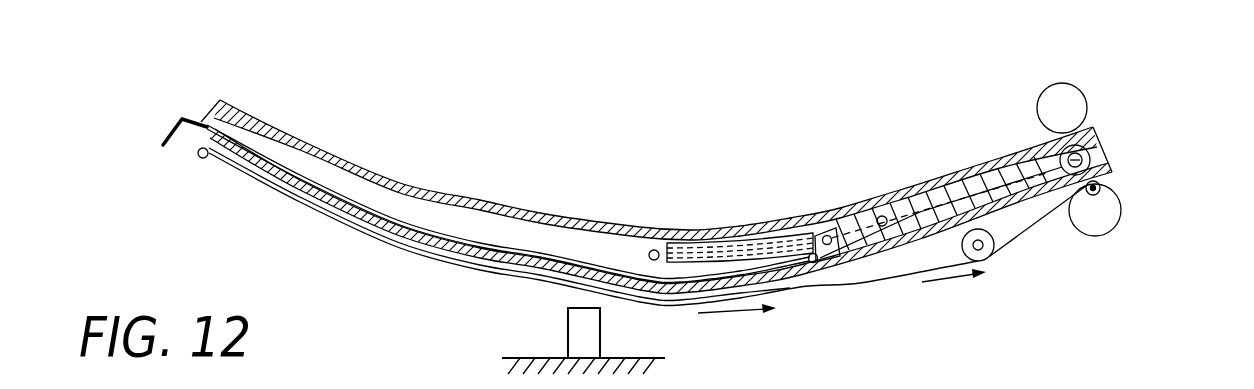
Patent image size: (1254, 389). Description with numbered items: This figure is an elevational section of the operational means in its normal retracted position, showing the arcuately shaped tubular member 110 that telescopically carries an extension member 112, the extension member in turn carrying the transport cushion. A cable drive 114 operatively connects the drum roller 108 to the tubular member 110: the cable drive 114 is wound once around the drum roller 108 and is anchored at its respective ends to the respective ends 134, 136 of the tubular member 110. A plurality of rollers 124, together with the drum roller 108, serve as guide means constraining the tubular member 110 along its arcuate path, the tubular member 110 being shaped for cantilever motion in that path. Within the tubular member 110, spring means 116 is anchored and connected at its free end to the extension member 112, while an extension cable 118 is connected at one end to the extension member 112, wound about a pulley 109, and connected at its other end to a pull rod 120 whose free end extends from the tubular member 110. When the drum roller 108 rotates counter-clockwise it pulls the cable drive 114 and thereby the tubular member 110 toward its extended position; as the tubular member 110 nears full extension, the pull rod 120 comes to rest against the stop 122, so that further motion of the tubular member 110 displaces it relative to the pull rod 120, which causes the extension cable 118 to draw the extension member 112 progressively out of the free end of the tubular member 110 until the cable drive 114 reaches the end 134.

The drum roller 108 is at (990, 257).
The pulley 109 is at (1090, 152).
The tubular member 110 is at (337, 154).
The extension member 112 is at (878, 214).
The cable drive 114 is at (895, 283).
The spring means 116 is at (734, 239).
The extension cable 118 is at (922, 197).
The pull rod 120 is at (190, 119).
The stop 122 is at (601, 328).
The rollers 124 is at (1087, 100).
The end of tubular member 134 is at (198, 158).
The end of tubular member 136 is at (1102, 187).